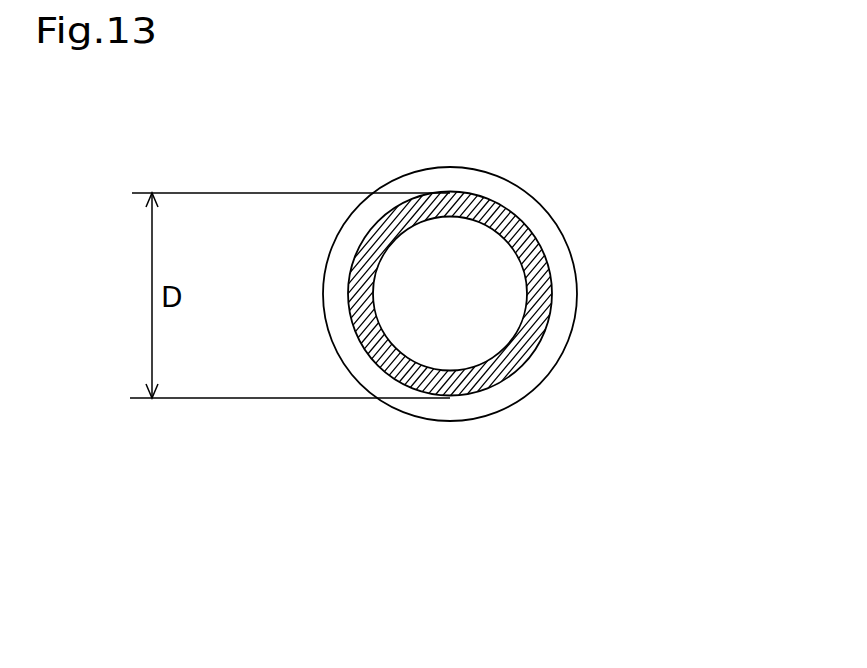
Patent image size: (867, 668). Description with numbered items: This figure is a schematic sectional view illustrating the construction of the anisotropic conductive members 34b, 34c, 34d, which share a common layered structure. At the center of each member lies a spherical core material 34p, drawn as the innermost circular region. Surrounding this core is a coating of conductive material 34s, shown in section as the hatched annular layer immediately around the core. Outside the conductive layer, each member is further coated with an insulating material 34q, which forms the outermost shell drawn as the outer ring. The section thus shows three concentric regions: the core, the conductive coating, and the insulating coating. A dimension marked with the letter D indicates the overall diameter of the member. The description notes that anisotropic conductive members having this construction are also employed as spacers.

The spherical core material 34p is at (468, 258).
The conductive material 34s is at (552, 274).
The insulating material 34q is at (485, 405).
The anisotropic conductive member 34b is at (563, 378).
The anisotropic conductive member 34c is at (722, 447).
The anisotropic conductive member 34d is at (797, 447).